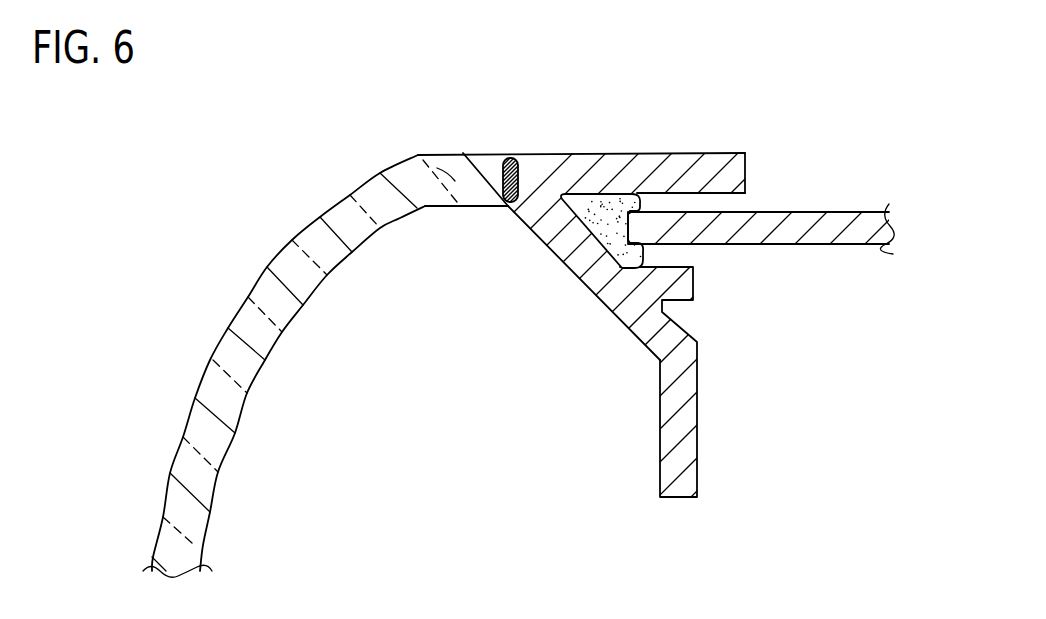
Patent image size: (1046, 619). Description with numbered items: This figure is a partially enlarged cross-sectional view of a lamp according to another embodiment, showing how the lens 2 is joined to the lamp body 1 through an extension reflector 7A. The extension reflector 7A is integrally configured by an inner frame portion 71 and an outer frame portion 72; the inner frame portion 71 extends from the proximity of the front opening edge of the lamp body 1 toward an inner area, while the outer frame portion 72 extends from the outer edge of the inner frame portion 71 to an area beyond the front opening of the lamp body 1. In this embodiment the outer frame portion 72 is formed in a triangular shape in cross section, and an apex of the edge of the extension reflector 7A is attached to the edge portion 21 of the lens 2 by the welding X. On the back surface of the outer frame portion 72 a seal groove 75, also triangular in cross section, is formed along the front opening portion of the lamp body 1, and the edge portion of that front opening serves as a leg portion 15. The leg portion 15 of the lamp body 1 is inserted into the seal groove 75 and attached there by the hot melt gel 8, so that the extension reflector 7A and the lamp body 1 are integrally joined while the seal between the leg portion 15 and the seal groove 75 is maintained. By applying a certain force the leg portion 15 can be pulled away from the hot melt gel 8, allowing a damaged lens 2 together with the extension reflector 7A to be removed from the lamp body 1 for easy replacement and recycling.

The lamp body 1 is at (822, 230).
The lens 2 is at (245, 323).
The hot melt gel 8 is at (593, 218).
The leg portion 15 is at (663, 225).
The edge portion of the lens 21 is at (420, 155).
The inner frame portion 71 is at (683, 467).
The outer frame portion 72 is at (613, 175).
The seal groove 75 is at (677, 207).
The extension reflector 7A is at (637, 347).
The welding X is at (503, 155).